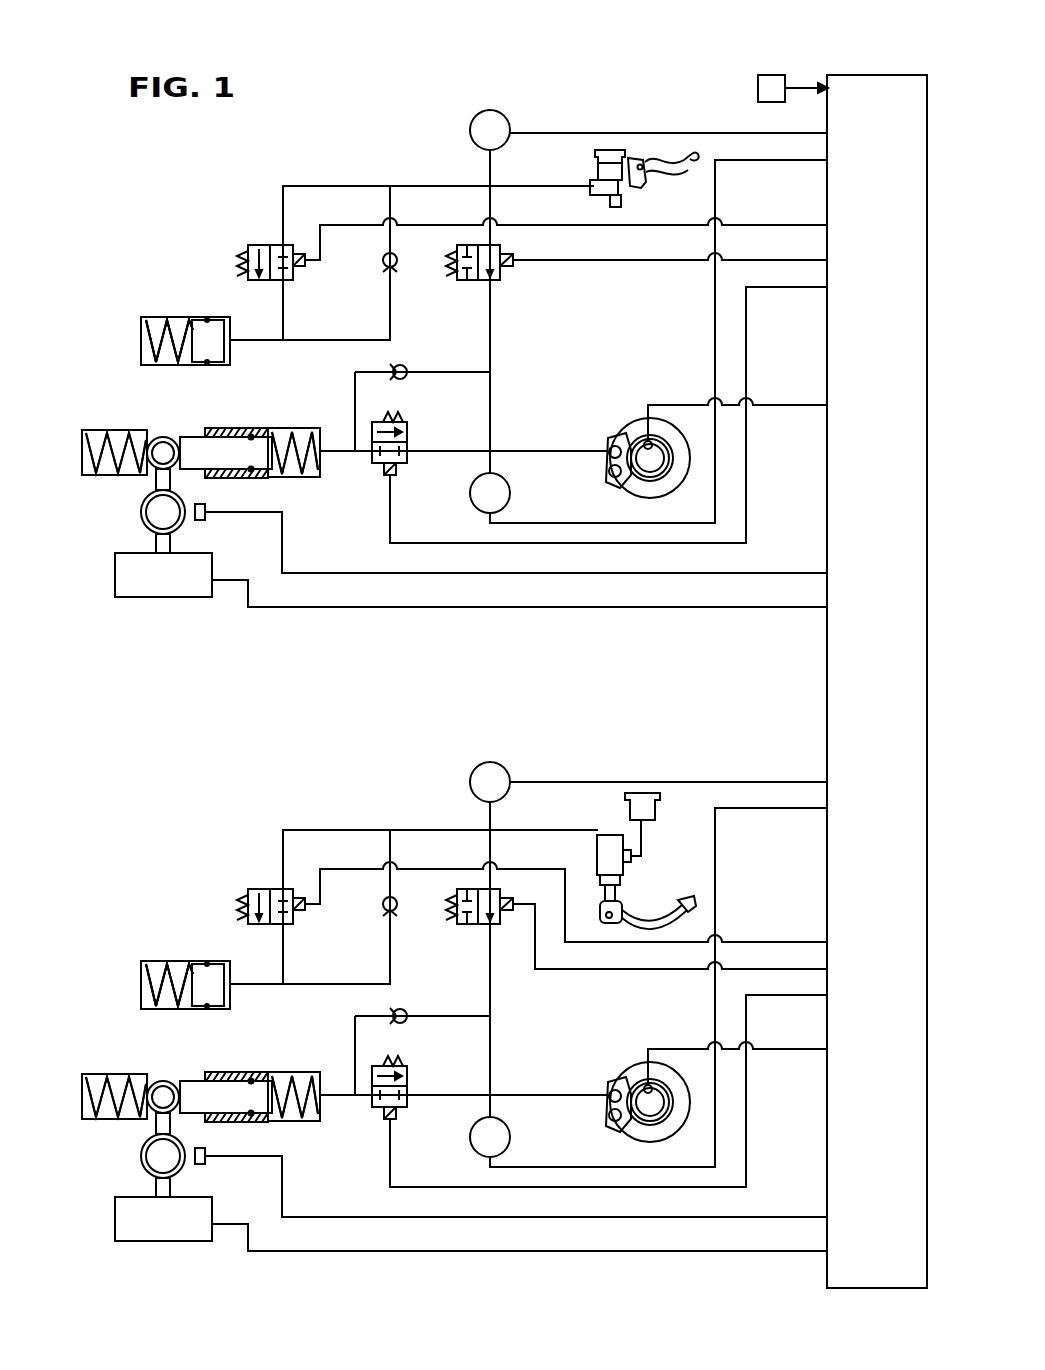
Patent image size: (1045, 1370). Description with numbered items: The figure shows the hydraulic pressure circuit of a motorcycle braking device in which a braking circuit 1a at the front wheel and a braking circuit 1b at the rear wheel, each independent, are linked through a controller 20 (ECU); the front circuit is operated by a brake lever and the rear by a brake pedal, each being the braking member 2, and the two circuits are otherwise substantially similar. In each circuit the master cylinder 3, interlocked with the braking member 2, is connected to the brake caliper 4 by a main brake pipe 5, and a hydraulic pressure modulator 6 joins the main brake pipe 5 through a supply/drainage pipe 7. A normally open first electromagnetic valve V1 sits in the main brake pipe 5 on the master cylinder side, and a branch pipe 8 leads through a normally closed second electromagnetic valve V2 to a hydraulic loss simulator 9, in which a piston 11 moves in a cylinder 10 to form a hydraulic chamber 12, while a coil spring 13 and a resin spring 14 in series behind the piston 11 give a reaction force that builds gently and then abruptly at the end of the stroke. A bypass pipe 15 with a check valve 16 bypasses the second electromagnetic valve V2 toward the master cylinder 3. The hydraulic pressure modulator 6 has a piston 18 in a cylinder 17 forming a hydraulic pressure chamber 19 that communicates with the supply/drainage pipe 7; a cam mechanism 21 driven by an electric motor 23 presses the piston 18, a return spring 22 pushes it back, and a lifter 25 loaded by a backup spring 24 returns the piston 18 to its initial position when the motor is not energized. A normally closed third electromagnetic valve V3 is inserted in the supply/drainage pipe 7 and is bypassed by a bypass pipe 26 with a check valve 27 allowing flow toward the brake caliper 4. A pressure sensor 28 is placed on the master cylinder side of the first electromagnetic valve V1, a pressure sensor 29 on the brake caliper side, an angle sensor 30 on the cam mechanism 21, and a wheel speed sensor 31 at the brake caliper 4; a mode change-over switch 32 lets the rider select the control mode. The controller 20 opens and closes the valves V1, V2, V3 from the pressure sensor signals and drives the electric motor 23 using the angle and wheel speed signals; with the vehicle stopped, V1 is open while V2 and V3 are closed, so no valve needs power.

The braking circuit at the front wheel 1a is at (602, 103).
The braking circuit at the rear wheel 1b is at (602, 760).
The braking member 2 is at (668, 155).
The master cylinder 3 is at (590, 185).
The brake caliper 4 is at (607, 440).
The main brake pipe 5 is at (492, 355).
The hydraulic pressure modulator 6 is at (228, 428).
The supply/drainage pipe 7 is at (454, 451).
The branch pipe 8 is at (345, 186).
The hydraulic loss simulator 9 is at (168, 312).
The cylinder 10 is at (206, 318).
The piston 11 is at (213, 337).
The hydraulic chamber 12 is at (228, 353).
The coil spring 13 is at (143, 340).
The resin spring 14 is at (169, 663).
The bypass pipe 15 is at (320, 340).
The check valve 16 is at (382, 263).
The cylinder 17 is at (235, 478).
The piston 18 is at (205, 445).
The hydraulic pressure chamber 19 is at (290, 437).
The controller 20 is at (898, 90).
The cam mechanism 21 is at (162, 434).
The return spring 22 is at (300, 465).
The electric motor 23 is at (136, 590).
The backup spring 24 is at (82, 458).
The lifter 25 is at (137, 432).
The bypass pipe 26 is at (452, 372).
The check valve 27 is at (392, 370).
The pressure sensor 28 is at (490, 110).
The pressure sensor 29 is at (511, 494).
The angle sensor 30 is at (192, 524).
The wheel speed sensor 31 is at (647, 440).
The mode change-over switch 32 is at (773, 74).
The first electromagnetic valve V1 is at (466, 280).
The second electromagnetic valve V2 is at (258, 245).
The third electromagnetic valve V3 is at (407, 462).